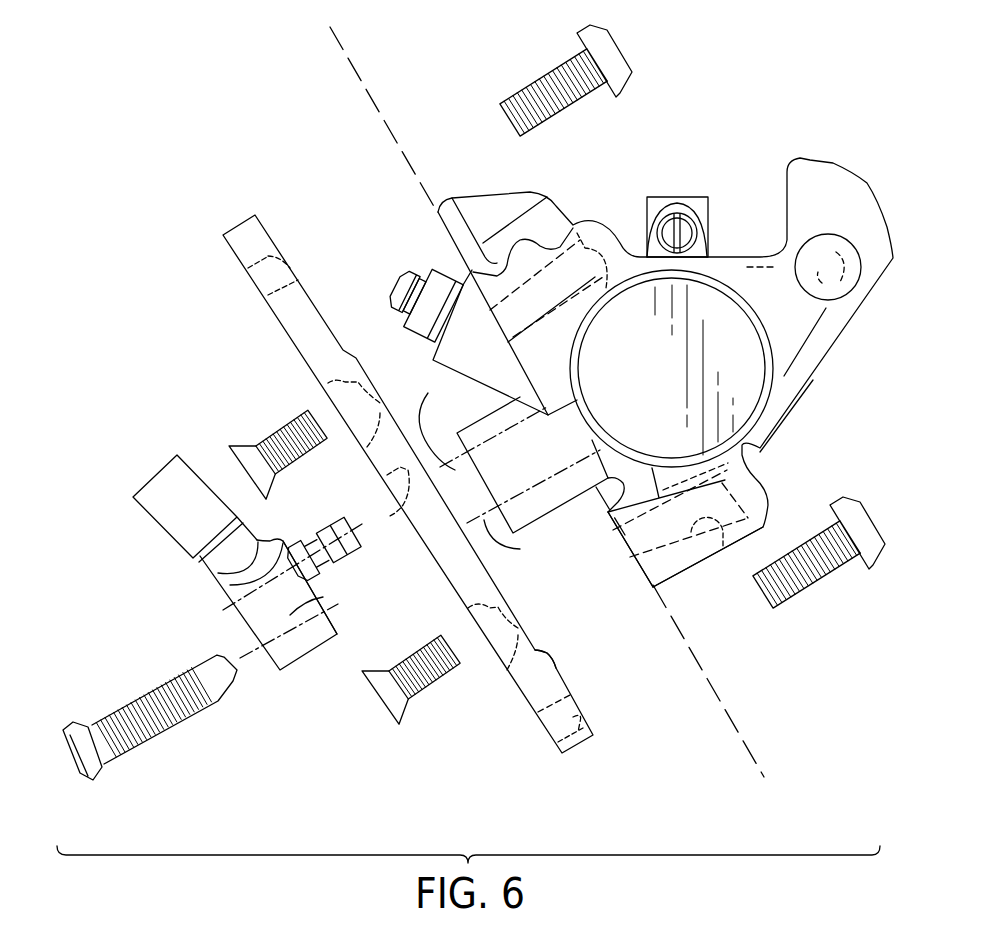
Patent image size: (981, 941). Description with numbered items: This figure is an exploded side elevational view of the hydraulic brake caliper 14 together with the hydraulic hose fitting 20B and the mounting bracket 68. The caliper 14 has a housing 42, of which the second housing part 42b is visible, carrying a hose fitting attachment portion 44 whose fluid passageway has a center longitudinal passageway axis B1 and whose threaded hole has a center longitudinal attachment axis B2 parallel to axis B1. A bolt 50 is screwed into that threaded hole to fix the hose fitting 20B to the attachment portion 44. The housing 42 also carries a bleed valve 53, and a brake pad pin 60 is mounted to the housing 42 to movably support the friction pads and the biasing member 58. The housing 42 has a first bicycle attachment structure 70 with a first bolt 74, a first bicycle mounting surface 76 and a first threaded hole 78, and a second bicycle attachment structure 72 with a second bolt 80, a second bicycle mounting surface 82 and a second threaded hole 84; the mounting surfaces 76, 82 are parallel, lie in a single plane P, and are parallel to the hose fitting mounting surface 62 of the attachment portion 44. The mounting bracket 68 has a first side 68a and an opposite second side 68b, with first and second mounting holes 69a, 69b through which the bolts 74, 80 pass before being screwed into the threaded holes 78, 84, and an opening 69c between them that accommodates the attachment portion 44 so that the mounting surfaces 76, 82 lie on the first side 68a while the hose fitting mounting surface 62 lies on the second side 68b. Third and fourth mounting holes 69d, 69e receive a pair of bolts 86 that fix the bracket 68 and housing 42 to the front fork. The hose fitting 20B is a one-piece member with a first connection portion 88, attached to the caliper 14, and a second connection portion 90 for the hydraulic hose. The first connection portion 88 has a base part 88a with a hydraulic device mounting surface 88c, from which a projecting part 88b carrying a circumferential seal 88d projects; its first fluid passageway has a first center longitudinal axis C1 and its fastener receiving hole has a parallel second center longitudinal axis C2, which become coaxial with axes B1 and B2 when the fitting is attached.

The hydraulic brake caliper 14 is at (718, 116).
The hydraulic hose fitting 20B is at (146, 567).
The housing 42 is at (843, 160).
The second housing part 42b is at (824, 344).
The hose fitting attachment portion 44 is at (573, 447).
The bolt 50 is at (75, 778).
The bleed valve 53 is at (442, 265).
The biasing member 58 is at (667, 196).
The brake pad pin 60 is at (700, 224).
The hose fitting mounting surface 62 is at (437, 424).
The mounting bracket 68 is at (283, 336).
The first side 68a is at (535, 645).
The second side 68b is at (521, 693).
The first mounting hole 69a is at (393, 400).
The second mounting hole 69b is at (518, 628).
The opening 69c is at (403, 508).
The third mounting hole 69d is at (293, 268).
The fourth mounting hole 69e is at (598, 712).
The first bicycle attachment structure 70 is at (517, 262).
The second bicycle attachment structure 72 is at (700, 580).
The first bolt 74 is at (276, 430).
The first bicycle mounting surface 76 is at (481, 306).
The first threaded hole 78 is at (601, 249).
The second bolt 80 is at (440, 688).
The second bicycle mounting surface 82 is at (650, 584).
The second threaded hole 84 is at (719, 543).
The bolts 86 is at (541, 79).
The first connection portion 88 is at (288, 601).
The base part 88a is at (327, 602).
The projecting part 88b is at (342, 520).
The hydraulic device mounting surface 88c is at (333, 613).
The circumferential seal 88d is at (326, 566).
The second connection portion 90 is at (197, 458).
The plane P is at (327, 30).
The center longitudinal passageway axis B1 is at (431, 431).
The center longitudinal attachment axis B2 is at (515, 539).
The first center longitudinal axis C1 is at (228, 604).
The second center longitudinal axis C2 is at (285, 680).